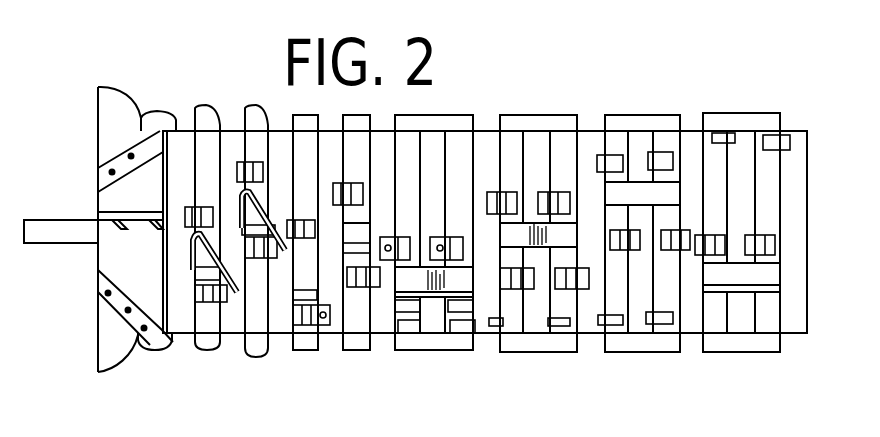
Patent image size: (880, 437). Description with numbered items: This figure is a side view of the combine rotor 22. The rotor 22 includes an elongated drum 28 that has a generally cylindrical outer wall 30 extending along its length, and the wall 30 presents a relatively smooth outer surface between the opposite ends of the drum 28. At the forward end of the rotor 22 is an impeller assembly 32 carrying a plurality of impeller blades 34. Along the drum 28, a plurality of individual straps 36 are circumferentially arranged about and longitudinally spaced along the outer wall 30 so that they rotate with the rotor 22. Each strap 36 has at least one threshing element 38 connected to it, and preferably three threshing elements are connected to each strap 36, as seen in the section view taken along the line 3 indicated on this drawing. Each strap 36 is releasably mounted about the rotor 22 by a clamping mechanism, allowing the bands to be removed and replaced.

The combine rotor 22 is at (600, 102).
The elongated drum 28 is at (278, 315).
The cylindrical outer wall 30 is at (483, 130).
The impeller assembly 32 is at (133, 93).
The impeller blades 34 is at (117, 333).
The straps 36 is at (292, 146).
The threshing element 38 is at (265, 215).
The section line 3- 3 is at (215, 79).